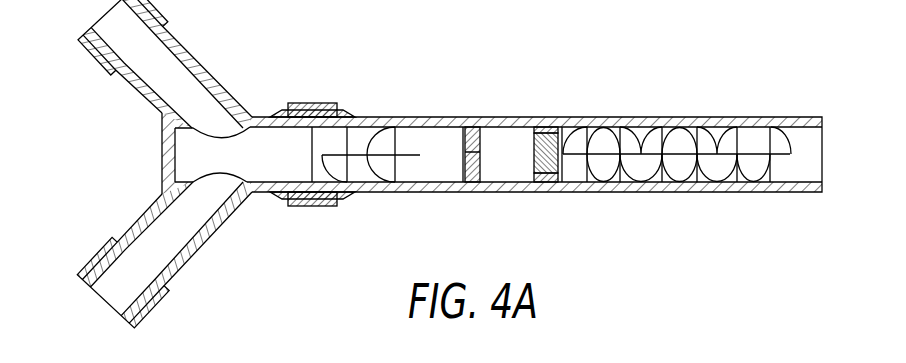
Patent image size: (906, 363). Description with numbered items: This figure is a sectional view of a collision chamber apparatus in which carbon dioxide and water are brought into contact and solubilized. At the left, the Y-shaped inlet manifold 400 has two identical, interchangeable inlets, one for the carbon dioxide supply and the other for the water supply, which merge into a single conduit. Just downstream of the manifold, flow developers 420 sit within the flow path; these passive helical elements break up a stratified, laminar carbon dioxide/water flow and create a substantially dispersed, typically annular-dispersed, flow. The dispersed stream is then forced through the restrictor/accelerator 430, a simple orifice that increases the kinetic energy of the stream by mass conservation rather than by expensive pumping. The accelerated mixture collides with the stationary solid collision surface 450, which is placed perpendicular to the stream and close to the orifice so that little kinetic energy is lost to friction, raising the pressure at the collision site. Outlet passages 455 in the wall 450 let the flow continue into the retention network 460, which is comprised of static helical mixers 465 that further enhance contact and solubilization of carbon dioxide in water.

The Y-shaped inlet manifold 400 is at (383, 92).
The flow developers 420 is at (367, 160).
The restrictor/accelerator 430 is at (480, 152).
The collision surface 450 is at (534, 152).
The outlet passages 455 is at (558, 132).
The retention network 460 is at (689, 146).
The static helical mixers 465 is at (705, 154).